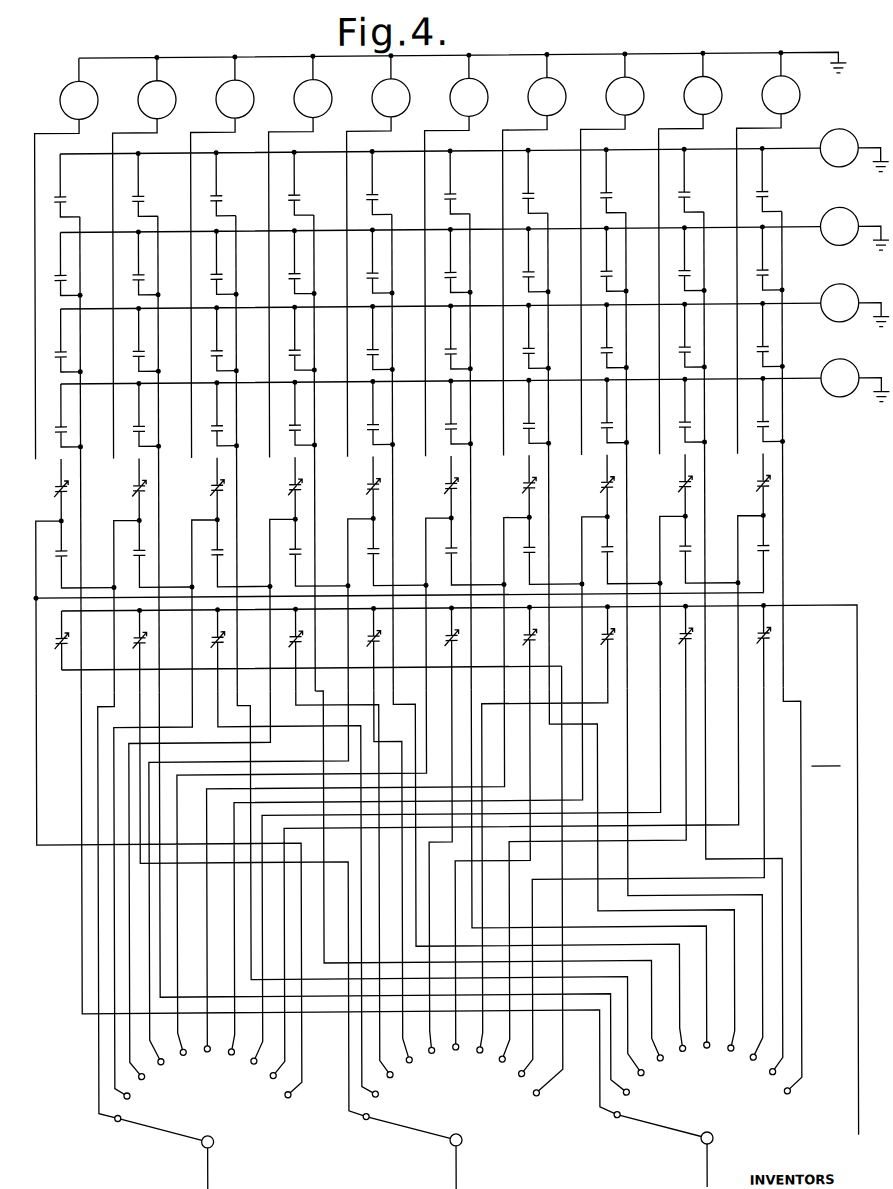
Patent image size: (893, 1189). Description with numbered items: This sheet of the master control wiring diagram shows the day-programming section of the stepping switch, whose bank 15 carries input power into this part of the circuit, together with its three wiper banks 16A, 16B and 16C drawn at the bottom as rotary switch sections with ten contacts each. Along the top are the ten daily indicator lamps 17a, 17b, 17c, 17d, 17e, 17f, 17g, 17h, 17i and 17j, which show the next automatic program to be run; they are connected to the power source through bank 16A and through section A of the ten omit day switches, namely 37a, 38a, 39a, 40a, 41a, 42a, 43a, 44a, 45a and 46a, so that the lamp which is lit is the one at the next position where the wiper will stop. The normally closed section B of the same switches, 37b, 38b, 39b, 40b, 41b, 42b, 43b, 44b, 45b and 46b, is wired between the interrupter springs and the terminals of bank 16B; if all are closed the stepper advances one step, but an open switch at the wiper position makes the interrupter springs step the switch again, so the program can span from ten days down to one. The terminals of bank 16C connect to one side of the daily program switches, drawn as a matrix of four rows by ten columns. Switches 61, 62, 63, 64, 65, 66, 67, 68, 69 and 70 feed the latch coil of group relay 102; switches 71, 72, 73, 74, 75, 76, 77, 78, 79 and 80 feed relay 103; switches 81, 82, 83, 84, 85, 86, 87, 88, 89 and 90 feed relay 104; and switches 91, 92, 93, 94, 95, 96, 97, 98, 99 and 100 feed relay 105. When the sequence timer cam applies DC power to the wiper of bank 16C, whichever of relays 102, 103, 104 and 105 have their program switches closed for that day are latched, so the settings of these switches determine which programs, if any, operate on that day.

The bank of stepping switch 15 is at (825, 757).
The bank A of stepping switch 16A is at (203, 1117).
The bank B of stepping switch 16B is at (451, 1116).
The bank C of stepping switch 16C is at (702, 1114).
The daily indicator lamp 17a is at (86, 90).
The daily indicator lamp 17b is at (160, 257).
The daily indicator lamp 17c is at (238, 256).
The daily indicator lamp 17d is at (316, 255).
The daily indicator lamp 17e is at (394, 255).
The daily indicator lamp 17f is at (470, 254).
The daily indicator lamp 17g is at (550, 254).
The daily indicator lamp 17h is at (628, 253).
The daily indicator lamp 17i is at (703, 252).
The daily indicator lamp 17j is at (781, 252).
The section A of omit day switch 37a is at (54, 488).
The section A of omit day switch 38a is at (147, 575).
The section A of omit day switch 39a is at (225, 574).
The section A of omit day switch 40a is at (303, 574).
The section A of omit day switch 41a is at (381, 573).
The section A of omit day switch 42a is at (459, 573).
The section A of omit day switch 43a is at (537, 572).
The section A of omit day switch 44a is at (615, 571).
The section A of omit day switch 45a is at (693, 571).
The section A of omit day switch 46a is at (747, 570).
The normally closed section B of omit day switch 37b is at (70, 638).
The normally closed section B of omit day switch 38b is at (115, 650).
The normally closed section B of omit day switch 39b is at (194, 649).
The normally closed section B of omit day switch 40b is at (272, 649).
The normally closed section B of omit day switch 41b is at (350, 648).
The normally closed section B of omit day switch 42b is at (428, 647).
The normally closed section B of omit day switch 43b is at (506, 647).
The normally closed section B of omit day switch 44b is at (584, 646).
The normally closed section B of omit day switch 45b is at (662, 646).
The normally closed section B of omit day switch 46b is at (740, 645).
The daily program switch 61 is at (67, 197).
The daily program switch 62 is at (151, 184).
The daily program switch 63 is at (229, 183).
The daily program switch 64 is at (307, 182).
The daily program switch 65 is at (385, 182).
The daily program switch 66 is at (463, 181).
The daily program switch 67 is at (541, 181).
The daily program switch 68 is at (619, 180).
The daily program switch 69 is at (697, 179).
The daily program switch 70 is at (775, 179).
The daily program switch 71 is at (74, 279).
The daily program switch 72 is at (158, 263).
The daily program switch 73 is at (236, 262).
The daily program switch 74 is at (314, 262).
The daily program switch 75 is at (392, 261).
The daily program switch 76 is at (470, 261).
The daily program switch 77 is at (548, 260).
The daily program switch 78 is at (626, 259).
The daily program switch 79 is at (704, 259).
The daily program switch 80 is at (782, 258).
The daily program switch 81 is at (74, 347).
The daily program switch 82 is at (159, 340).
The daily program switch 83 is at (237, 339).
The daily program switch 84 is at (315, 338).
The daily program switch 85 is at (393, 338).
The daily program switch 86 is at (471, 337).
The daily program switch 87 is at (549, 337).
The daily program switch 88 is at (627, 336).
The daily program switch 89 is at (705, 335).
The daily program switch 90 is at (783, 335).
The daily program switch 91 is at (74, 422).
The daily program switch 92 is at (159, 415).
The daily program switch 93 is at (237, 414).
The daily program switch 94 is at (315, 413).
The daily program switch 95 is at (393, 413).
The daily program switch 96 is at (471, 412).
The daily program switch 97 is at (549, 412).
The daily program switch 98 is at (627, 411).
The daily program switch 99 is at (705, 410).
The daily program switch 100 is at (788, 410).
The group relay 102 is at (863, 127).
The group relay 103 is at (863, 206).
The group relay 104 is at (863, 282).
The group relay 105 is at (863, 357).